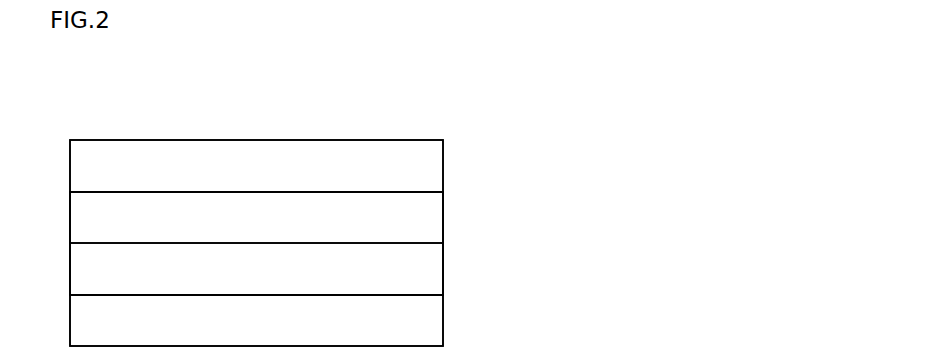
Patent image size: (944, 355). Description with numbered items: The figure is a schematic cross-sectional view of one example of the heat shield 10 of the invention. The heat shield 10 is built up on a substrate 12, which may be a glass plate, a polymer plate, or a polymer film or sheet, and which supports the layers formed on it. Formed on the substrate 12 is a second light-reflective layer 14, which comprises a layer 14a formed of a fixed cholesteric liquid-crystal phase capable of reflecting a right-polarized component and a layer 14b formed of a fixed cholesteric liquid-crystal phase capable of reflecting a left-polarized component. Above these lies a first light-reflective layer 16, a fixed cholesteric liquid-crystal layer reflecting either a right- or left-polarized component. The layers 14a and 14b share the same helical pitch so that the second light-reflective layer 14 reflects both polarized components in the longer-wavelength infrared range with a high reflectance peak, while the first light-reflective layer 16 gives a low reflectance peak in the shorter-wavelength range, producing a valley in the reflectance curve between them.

The heat shield 10 is at (307, 121).
The substrate 12 is at (431, 325).
The second light-reflective layer 14 is at (552, 197).
The layer formed of a fixed cholesteric liquid-crystal phase, reflecting right-polar 14a is at (431, 272).
The layer formed of a fixed cholesteric liquid-crystal phase, reflecting left-polari 14b is at (431, 223).
The first light-reflective layer 16 is at (420, 162).